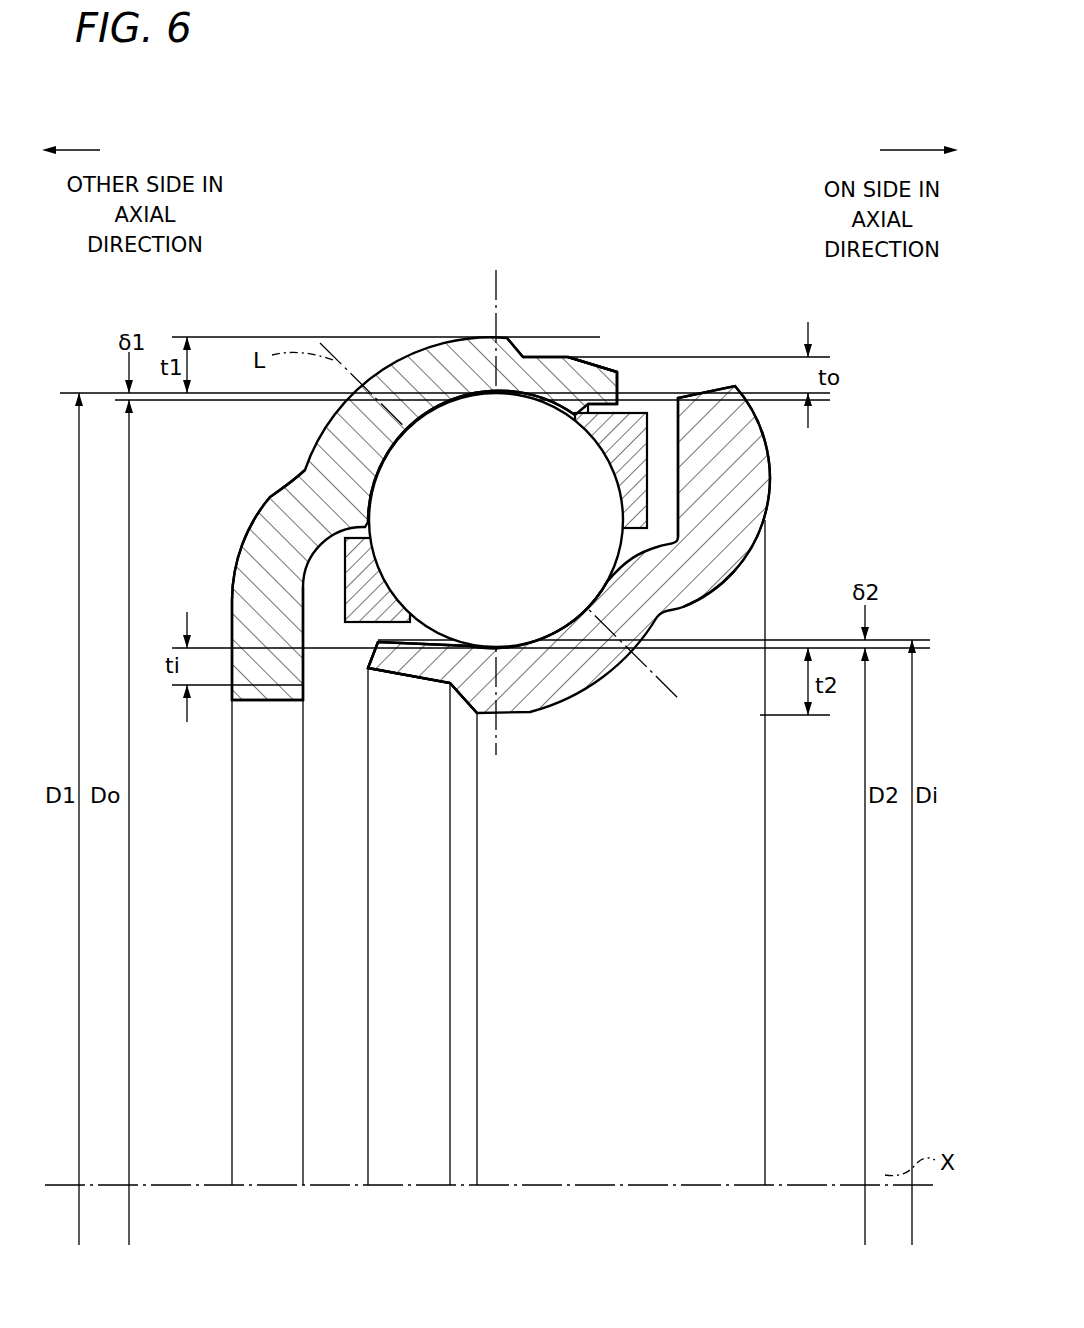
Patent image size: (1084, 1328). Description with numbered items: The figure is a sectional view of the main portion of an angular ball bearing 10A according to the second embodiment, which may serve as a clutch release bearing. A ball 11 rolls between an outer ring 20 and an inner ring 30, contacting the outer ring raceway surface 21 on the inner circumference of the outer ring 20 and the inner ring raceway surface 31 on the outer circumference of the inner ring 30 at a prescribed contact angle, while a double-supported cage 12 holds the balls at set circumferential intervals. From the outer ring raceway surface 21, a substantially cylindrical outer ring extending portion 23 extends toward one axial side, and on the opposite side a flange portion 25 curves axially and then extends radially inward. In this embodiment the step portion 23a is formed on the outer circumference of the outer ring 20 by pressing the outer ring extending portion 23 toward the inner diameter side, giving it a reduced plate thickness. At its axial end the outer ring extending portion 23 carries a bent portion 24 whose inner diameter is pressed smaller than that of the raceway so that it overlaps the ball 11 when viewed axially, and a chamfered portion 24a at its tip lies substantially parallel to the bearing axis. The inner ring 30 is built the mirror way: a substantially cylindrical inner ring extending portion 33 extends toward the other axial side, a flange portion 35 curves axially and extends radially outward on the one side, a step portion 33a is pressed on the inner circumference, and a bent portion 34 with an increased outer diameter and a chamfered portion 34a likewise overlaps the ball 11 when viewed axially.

The angular ball bearing 10A is at (691, 191).
The ball 11 is at (350, 482).
The double-supported cage 12 is at (288, 491).
The outer ring 20 is at (401, 346).
The outer ring raceway surface 21 is at (463, 397).
The outer ring extending portion 23 is at (555, 352).
The step portion 23a is at (517, 342).
The bent portion 24 is at (597, 376).
The chamfered portion 24a is at (618, 392).
The flange portion 25 is at (262, 622).
The inner ring 30 is at (608, 692).
The inner ring raceway surface 31 is at (553, 613).
The inner ring extending portion 33 is at (432, 680).
The step portion 33a is at (460, 703).
The bent portion 34 is at (398, 662).
The chamfered portion 34a is at (374, 645).
The flange portion 35 is at (735, 487).